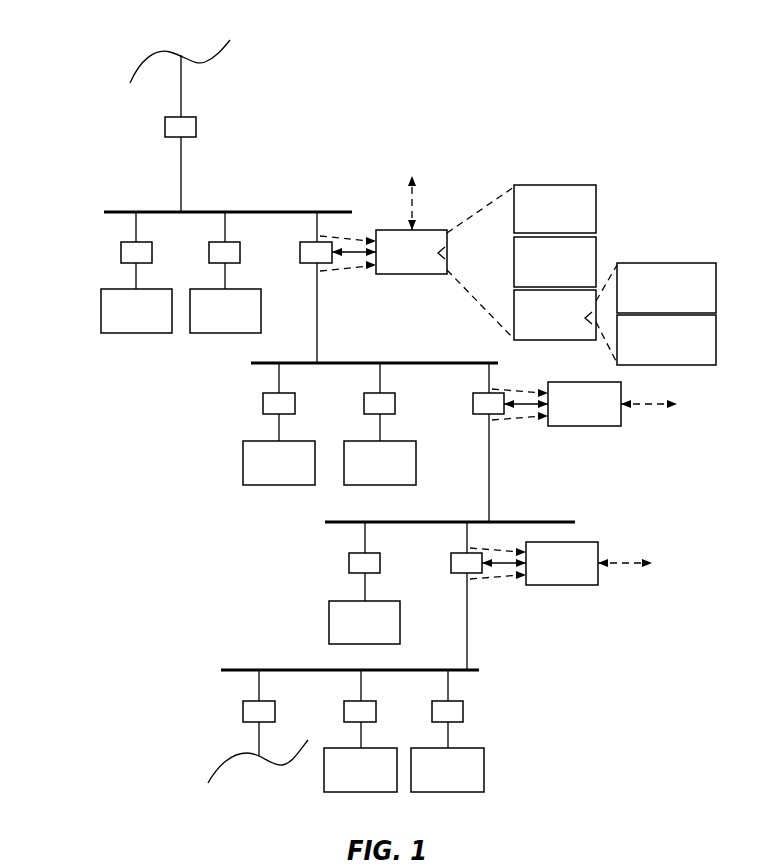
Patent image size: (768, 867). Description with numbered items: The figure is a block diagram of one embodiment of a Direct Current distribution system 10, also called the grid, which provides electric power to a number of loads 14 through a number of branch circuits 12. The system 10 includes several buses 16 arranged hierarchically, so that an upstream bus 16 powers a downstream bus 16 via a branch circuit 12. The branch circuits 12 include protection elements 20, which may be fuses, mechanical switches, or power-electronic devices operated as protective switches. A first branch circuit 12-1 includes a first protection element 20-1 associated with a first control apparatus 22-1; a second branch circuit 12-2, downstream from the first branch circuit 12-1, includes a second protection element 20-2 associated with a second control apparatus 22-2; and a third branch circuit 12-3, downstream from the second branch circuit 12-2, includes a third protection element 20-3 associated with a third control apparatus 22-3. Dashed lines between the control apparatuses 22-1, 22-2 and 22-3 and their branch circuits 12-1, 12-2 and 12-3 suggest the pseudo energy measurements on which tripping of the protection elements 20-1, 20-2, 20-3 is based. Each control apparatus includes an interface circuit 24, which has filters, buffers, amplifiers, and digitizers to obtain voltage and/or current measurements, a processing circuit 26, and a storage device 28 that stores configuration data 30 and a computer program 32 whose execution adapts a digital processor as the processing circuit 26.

The DC distribution system 10 is at (80, 82).
The branch circuit 12 is at (181, 155).
The load 14 is at (125, 320).
The bus 16 is at (255, 212).
The protection element 20 is at (196, 130).
The first branch circuit 12-1 is at (317, 229).
The second branch circuit 12-2 is at (489, 380).
The third branch circuit 12-3 is at (467, 539).
The first protection element 20-1 is at (332, 260).
The second protection element 20-2 is at (500, 414).
The third protection element 20-3 is at (478, 572).
The first control apparatus 22-1 is at (432, 262).
The second control apparatus 22-2 is at (605, 414).
The third control apparatus 22-3 is at (582, 573).
The interface circuit 24 is at (544, 231).
The processing circuit 26 is at (544, 285).
The storage device 28 is at (544, 336).
The configuration data 30 is at (707, 311).
The computer program 32 is at (655, 361).